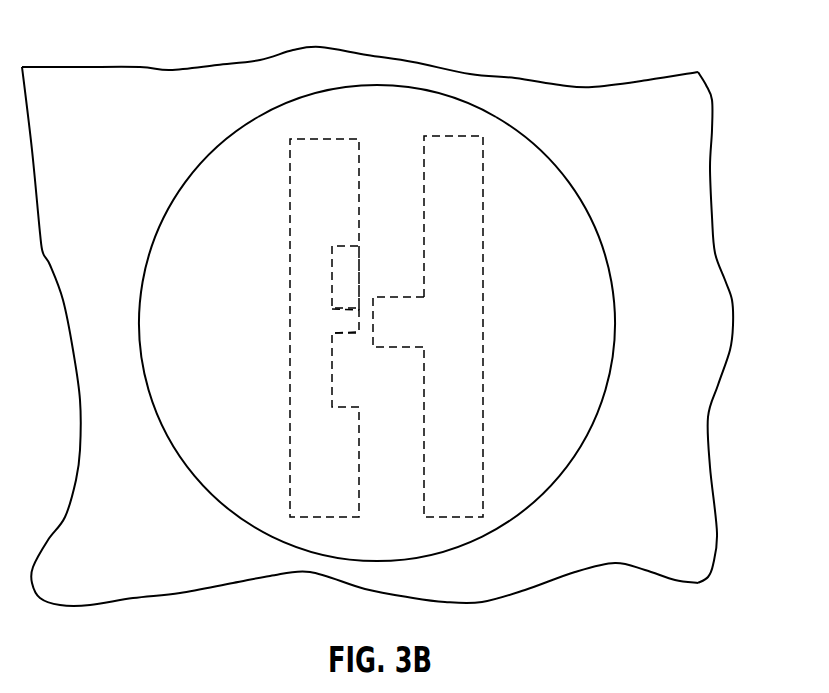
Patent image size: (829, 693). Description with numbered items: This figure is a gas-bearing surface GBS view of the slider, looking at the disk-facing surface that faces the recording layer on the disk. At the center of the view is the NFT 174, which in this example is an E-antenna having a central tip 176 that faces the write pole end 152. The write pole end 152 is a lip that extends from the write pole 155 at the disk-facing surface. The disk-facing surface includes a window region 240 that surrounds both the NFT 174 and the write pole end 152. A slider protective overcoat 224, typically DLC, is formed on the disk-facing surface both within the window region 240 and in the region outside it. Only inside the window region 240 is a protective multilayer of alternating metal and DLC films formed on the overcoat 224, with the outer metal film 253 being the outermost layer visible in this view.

The slider protective overcoat 224 is at (690, 133).
The gas-bearing surface GBS is at (697, 235).
The window region 240 is at (538, 150).
The outer metal film 253 is at (423, 115).
The NFT 174 is at (300, 232).
The central tip 176 is at (357, 322).
The write pole 155 is at (458, 218).
The write pole end 152 is at (385, 323).